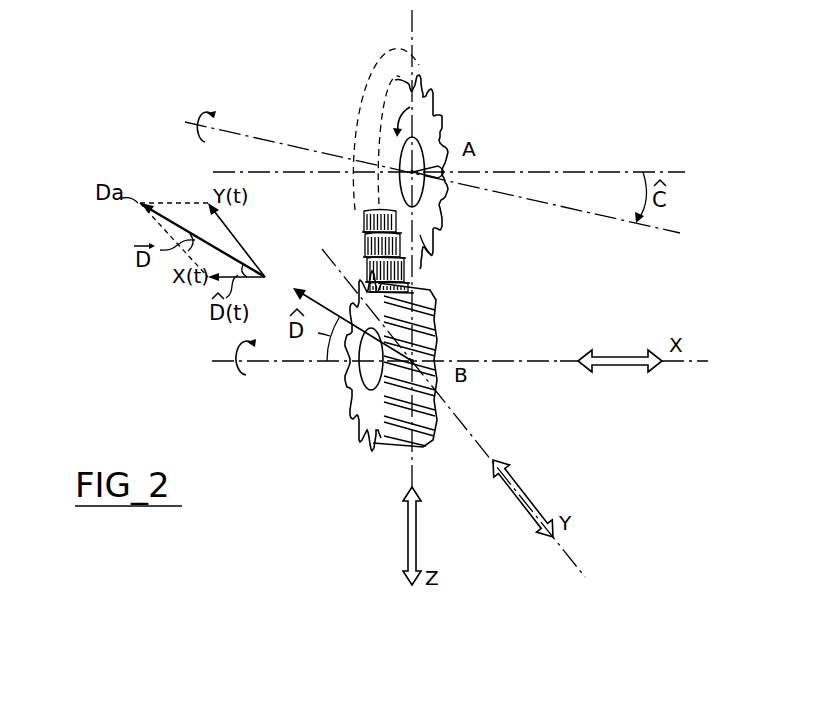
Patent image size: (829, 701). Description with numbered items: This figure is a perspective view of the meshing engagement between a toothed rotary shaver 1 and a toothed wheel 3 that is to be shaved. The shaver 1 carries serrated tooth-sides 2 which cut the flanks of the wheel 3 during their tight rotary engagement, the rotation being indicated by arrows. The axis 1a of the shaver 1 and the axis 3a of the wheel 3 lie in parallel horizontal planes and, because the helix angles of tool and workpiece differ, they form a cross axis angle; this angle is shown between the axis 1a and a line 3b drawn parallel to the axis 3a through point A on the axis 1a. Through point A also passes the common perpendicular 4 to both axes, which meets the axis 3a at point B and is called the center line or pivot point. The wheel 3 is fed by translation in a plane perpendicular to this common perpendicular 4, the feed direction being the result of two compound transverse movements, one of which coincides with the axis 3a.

The toothed rotary shaver 1 is at (420, 62).
The axis of the shaver 1a is at (240, 134).
The serrated tooth-sides 2 is at (357, 240).
The toothed wheel 3 is at (352, 418).
The axis of the toothed wheel 3a is at (222, 362).
The parallel to the wheel axis 3b is at (630, 172).
The common perpendicular 4 is at (422, 238).